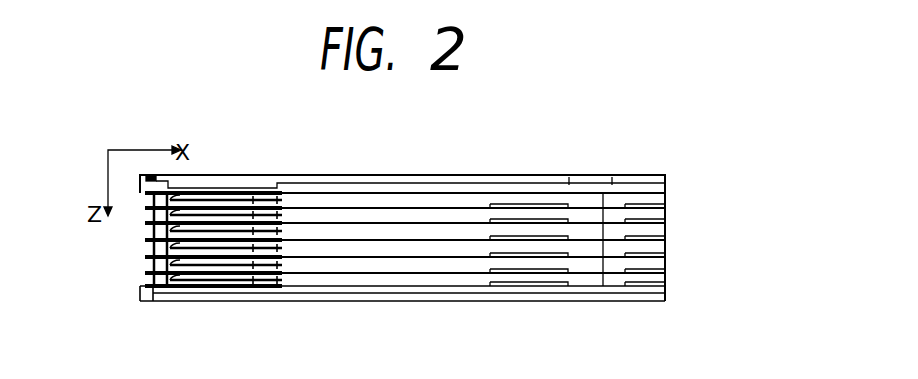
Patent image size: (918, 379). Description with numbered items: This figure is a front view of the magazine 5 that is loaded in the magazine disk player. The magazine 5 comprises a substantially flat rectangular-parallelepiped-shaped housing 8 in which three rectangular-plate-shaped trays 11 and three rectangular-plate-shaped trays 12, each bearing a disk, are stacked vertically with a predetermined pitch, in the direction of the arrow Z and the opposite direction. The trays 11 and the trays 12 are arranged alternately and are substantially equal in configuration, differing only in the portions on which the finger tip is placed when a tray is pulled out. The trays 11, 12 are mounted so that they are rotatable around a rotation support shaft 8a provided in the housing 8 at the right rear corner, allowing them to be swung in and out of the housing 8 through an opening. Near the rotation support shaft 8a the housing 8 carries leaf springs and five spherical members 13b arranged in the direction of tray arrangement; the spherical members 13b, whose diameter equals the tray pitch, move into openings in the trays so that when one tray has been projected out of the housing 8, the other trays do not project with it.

The magazine 5 is at (195, 303).
The housing 8 is at (250, 301).
The rotation support shaft 8a is at (150, 270).
The tray 11 is at (660, 204).
The tray 12 is at (660, 217).
The spherical member 13b is at (291, 212).